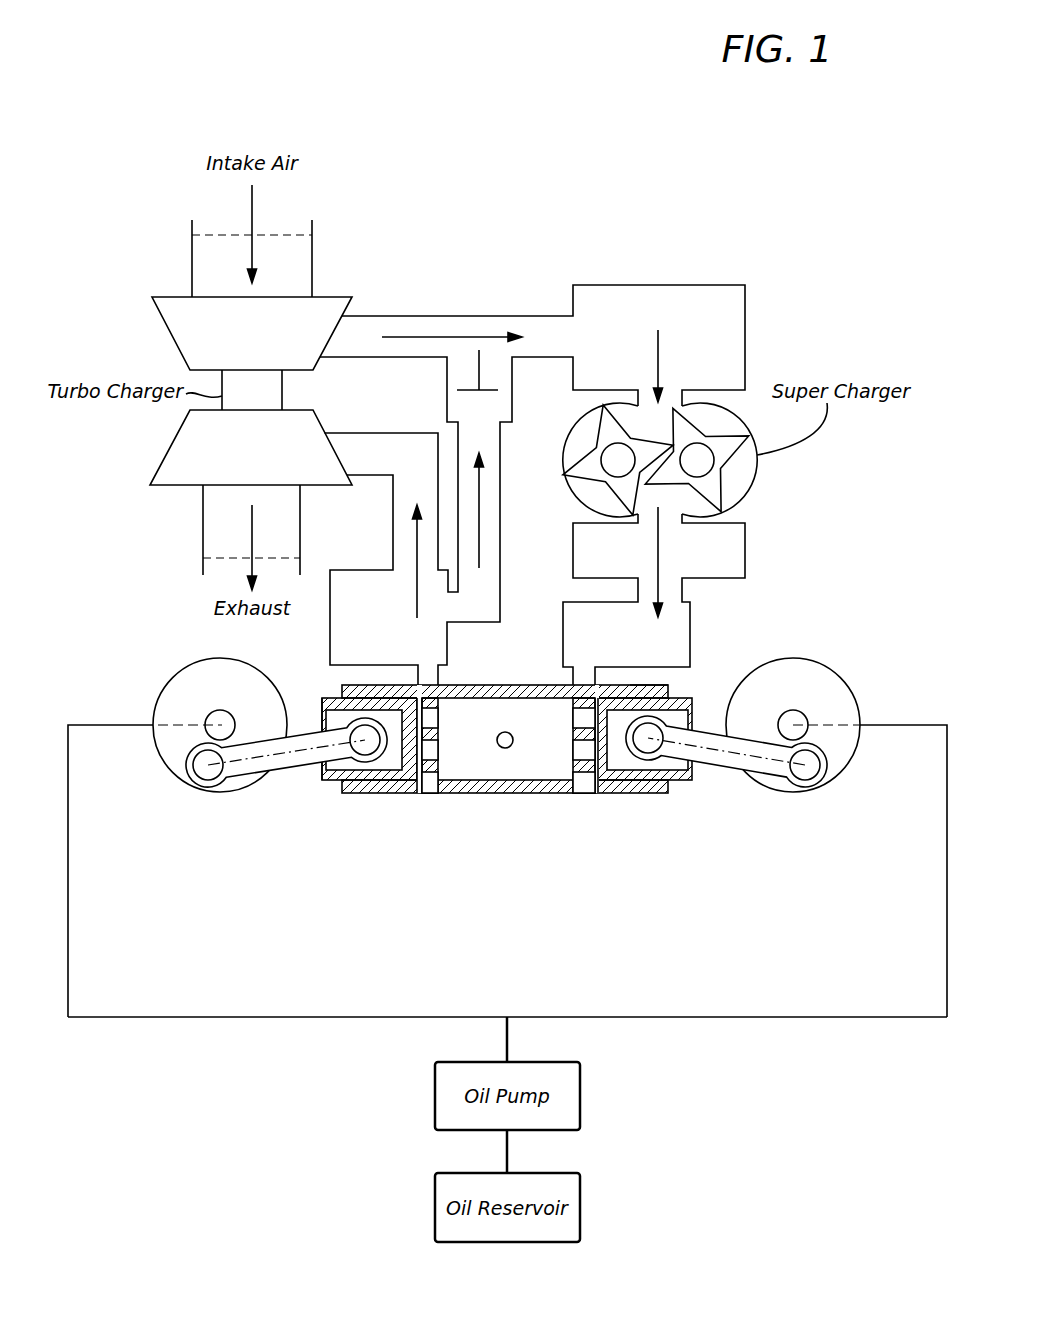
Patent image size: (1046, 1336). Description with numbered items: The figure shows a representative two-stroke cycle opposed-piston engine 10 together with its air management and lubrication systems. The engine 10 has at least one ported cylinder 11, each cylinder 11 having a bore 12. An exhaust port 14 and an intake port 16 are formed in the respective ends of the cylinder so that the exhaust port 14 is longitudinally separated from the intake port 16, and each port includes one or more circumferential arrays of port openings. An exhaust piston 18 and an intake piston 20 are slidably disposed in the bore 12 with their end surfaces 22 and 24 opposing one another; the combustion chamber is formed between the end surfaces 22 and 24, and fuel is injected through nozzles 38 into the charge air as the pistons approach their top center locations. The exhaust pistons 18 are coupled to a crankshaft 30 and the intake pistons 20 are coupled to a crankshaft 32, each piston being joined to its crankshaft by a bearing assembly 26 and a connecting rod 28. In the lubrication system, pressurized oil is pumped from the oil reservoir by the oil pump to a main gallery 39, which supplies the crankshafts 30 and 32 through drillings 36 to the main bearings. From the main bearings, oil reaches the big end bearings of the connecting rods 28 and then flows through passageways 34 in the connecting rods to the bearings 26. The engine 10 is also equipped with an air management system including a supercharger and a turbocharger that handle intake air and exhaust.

The opposed-piston engine 10 is at (829, 567).
The ported cylinder 11 is at (473, 692).
The bore 12 is at (530, 794).
The exhaust port 14 is at (430, 822).
The intake port 16 is at (588, 822).
The exhaust piston 18 is at (328, 786).
The intake piston 20 is at (680, 690).
The end surface 22 is at (430, 722).
The end surface 24 is at (585, 722).
The bearing assembly 26 is at (352, 733).
The connecting rod 28 is at (272, 782).
The crankshaft 30 is at (220, 792).
The crankshaft 32 is at (797, 792).
The passageways 34 is at (296, 755).
The drillings 36 is at (180, 725).
The nozzles 38 is at (512, 735).
The main gallery 39 is at (245, 1017).